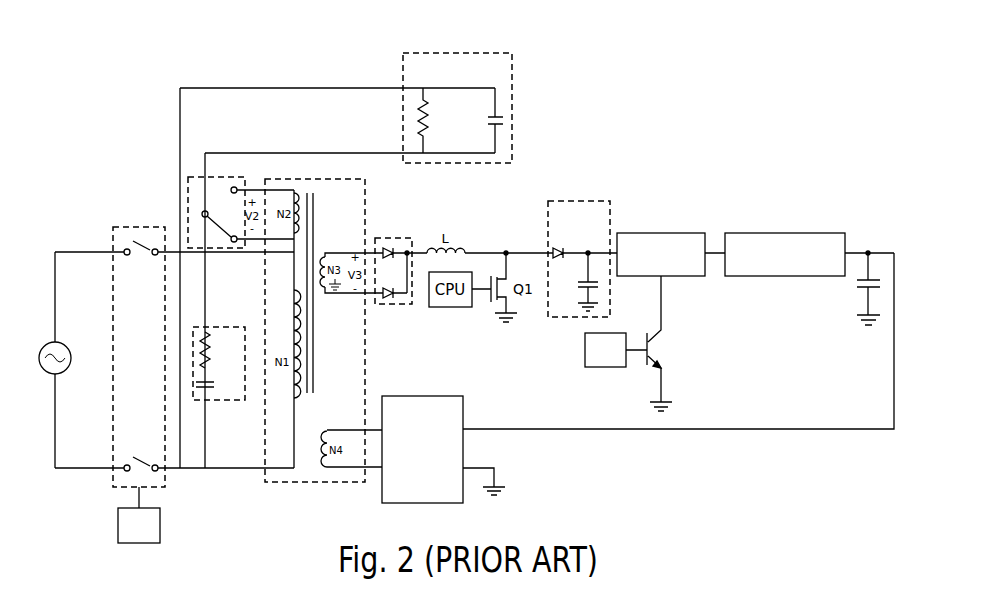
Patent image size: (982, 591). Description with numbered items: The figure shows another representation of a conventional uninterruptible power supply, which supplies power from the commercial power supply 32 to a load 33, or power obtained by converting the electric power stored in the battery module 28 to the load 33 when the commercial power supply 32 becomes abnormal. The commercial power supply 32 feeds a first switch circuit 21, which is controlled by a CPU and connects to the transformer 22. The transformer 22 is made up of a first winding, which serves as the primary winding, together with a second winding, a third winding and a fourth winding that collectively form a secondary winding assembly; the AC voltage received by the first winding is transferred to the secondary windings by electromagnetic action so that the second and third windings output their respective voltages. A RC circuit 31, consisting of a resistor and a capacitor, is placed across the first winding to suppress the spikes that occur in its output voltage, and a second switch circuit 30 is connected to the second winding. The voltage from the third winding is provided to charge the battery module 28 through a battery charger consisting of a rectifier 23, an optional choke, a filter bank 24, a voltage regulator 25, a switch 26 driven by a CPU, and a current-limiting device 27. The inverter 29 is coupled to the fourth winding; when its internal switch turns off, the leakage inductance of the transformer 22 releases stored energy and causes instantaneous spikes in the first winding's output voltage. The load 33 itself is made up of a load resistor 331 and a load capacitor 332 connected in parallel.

The first switch circuit 21 is at (139, 224).
The transformer 22 is at (366, 202).
The rectifier 23 is at (406, 240).
The filter bank 24 is at (580, 201).
The voltage regulator 25 is at (662, 233).
The switch 26 is at (664, 352).
The current-limiting device 27 is at (778, 233).
The battery module 28 is at (873, 270).
The inverter 29 is at (402, 395).
The second switch circuit 30 is at (227, 162).
The RC circuit 31 is at (219, 326).
The commercial power supply 32 is at (43, 345).
The load 33 is at (378, 91).
The load resistor 331 is at (418, 104).
The load capacitor 332 is at (503, 110).